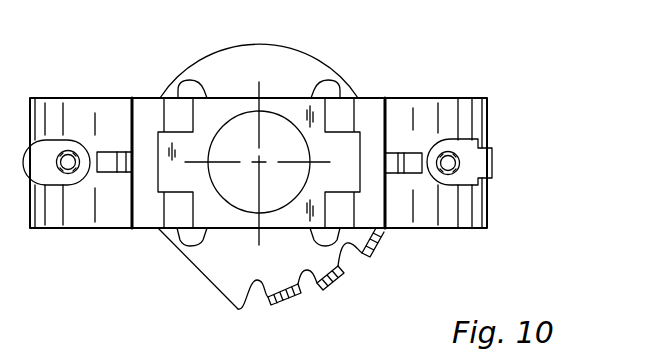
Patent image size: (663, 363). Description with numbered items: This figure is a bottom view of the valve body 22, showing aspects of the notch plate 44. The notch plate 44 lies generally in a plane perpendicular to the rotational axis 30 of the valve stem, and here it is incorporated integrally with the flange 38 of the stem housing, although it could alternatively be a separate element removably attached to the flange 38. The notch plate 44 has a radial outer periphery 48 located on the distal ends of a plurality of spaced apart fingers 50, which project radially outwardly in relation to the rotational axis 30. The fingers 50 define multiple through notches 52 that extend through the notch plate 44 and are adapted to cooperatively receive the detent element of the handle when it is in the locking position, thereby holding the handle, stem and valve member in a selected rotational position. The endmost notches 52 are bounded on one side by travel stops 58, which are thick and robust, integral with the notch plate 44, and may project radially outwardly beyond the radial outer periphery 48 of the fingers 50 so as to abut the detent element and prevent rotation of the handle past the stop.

The body 22 is at (428, 98).
The rotational axis 30 is at (259, 162).
The flange 38 is at (283, 123).
The notch plate 44 is at (337, 73).
The radial outer periphery 48 is at (292, 211).
The fingers 50 is at (292, 300).
The through notches 52 is at (257, 297).
The travel stops 58 is at (220, 292).